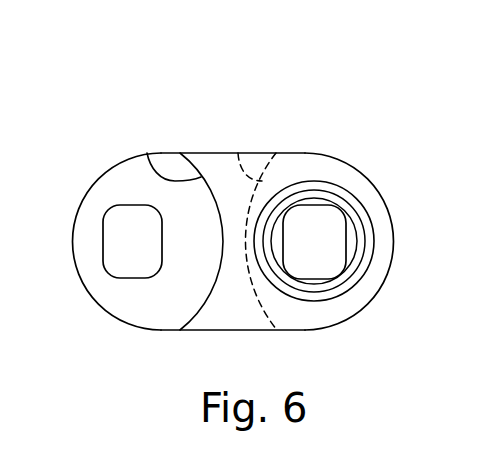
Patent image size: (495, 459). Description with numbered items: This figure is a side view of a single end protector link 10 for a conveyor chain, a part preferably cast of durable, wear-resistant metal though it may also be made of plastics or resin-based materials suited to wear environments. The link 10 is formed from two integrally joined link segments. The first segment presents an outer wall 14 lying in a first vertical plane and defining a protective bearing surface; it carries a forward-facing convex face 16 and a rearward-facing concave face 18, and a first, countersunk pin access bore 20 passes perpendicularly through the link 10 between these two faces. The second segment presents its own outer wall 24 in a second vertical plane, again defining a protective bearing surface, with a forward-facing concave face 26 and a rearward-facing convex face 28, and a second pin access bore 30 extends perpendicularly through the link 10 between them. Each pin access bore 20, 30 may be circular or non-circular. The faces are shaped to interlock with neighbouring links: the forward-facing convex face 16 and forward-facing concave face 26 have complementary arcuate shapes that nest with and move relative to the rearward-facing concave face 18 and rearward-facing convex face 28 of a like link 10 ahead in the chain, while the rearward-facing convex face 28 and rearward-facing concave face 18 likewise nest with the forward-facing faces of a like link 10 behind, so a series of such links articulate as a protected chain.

The end protector link 10 is at (101, 97).
The outer wall 14 is at (298, 167).
The forward-facing convex face 16 is at (395, 242).
The rearward-facing concave face 18 is at (149, 155).
The first pin access bore 20 is at (347, 209).
The outer wall 24 is at (145, 308).
The forward-facing concave face 26 is at (238, 153).
The rearward-facing convex face 28 is at (74, 254).
The second pin access bore 30 is at (105, 241).